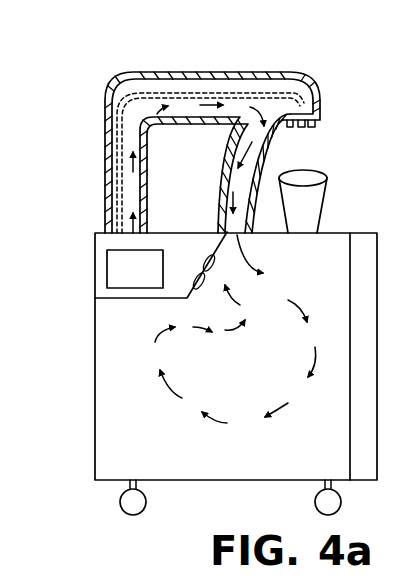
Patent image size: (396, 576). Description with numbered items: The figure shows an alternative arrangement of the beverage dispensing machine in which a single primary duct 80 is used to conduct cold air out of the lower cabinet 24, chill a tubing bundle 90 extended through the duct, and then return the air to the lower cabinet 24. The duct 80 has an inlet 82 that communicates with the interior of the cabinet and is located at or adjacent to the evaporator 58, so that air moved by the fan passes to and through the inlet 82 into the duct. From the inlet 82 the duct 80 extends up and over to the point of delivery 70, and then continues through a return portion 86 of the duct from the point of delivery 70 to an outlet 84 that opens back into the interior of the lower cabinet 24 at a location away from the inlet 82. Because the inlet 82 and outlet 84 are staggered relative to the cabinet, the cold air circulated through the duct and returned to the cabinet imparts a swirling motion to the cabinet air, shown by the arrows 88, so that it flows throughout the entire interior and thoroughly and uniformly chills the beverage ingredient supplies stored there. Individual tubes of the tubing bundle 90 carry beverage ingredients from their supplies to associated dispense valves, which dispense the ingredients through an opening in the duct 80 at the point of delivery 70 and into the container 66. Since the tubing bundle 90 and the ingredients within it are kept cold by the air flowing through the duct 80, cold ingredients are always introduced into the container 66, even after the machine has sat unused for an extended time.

The lower cabinet 24 is at (112, 452).
The evaporator 58 is at (128, 270).
The container 66 is at (307, 212).
The point of delivery 70 is at (297, 127).
The primary duct 80 is at (180, 70).
The inlet 82 is at (117, 230).
The outlet 84 is at (253, 263).
The return duct 86 is at (257, 160).
The arrows 88 is at (283, 413).
The tubing bundle 90 is at (255, 100).